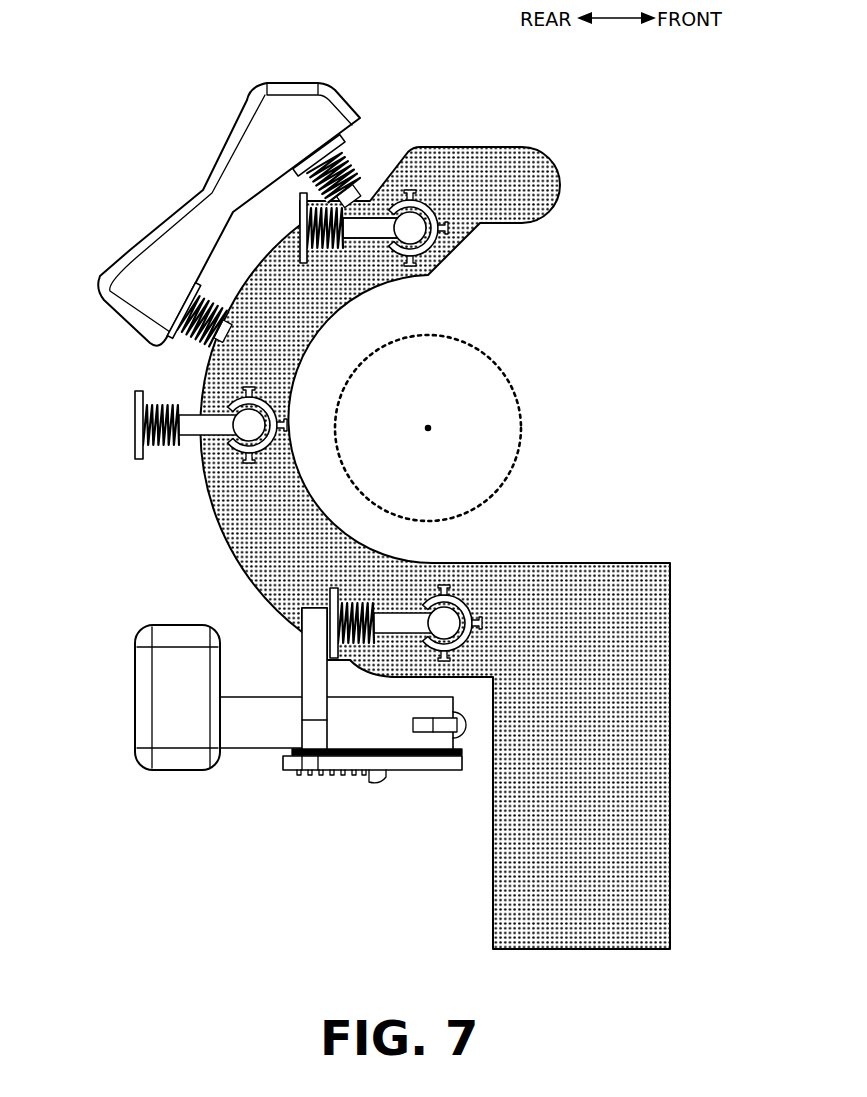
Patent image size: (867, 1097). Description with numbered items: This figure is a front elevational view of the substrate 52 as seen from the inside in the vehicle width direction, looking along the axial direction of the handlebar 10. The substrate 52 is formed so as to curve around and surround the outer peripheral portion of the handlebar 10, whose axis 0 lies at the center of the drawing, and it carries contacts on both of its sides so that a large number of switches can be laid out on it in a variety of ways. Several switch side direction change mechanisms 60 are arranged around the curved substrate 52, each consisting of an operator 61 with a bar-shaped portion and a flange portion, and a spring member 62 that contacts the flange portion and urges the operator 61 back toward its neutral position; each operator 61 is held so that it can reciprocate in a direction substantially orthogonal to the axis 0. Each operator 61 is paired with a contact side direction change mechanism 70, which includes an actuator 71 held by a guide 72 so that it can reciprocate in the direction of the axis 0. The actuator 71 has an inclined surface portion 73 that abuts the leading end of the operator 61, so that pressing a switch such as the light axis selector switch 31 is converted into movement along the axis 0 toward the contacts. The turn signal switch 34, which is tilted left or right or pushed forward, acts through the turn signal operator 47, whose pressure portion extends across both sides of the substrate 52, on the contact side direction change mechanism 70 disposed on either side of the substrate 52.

The axis 0 is at (431, 427).
The handlebar 10 is at (523, 437).
The light axis selector switch 31 is at (233, 142).
The turn signal switch 34 is at (157, 698).
The turn signal operator 47 is at (260, 731).
The substrate 52 is at (528, 160).
The switch side direction change mechanism 60 is at (270, 360).
The operator 61 is at (362, 238).
The spring member 62 is at (323, 243).
The contact side direction change mechanism 70 is at (401, 383).
The actuator 71 is at (414, 224).
The guide 72 is at (426, 240).
The inclined surface portion 73 is at (440, 233).